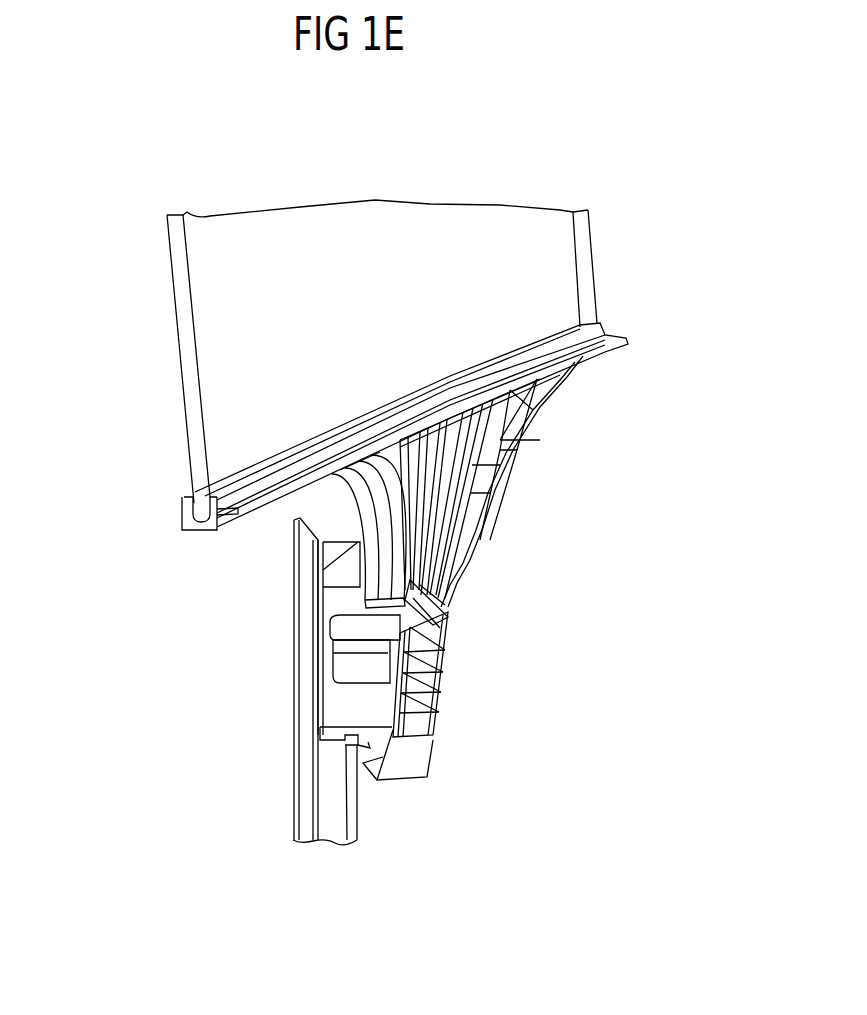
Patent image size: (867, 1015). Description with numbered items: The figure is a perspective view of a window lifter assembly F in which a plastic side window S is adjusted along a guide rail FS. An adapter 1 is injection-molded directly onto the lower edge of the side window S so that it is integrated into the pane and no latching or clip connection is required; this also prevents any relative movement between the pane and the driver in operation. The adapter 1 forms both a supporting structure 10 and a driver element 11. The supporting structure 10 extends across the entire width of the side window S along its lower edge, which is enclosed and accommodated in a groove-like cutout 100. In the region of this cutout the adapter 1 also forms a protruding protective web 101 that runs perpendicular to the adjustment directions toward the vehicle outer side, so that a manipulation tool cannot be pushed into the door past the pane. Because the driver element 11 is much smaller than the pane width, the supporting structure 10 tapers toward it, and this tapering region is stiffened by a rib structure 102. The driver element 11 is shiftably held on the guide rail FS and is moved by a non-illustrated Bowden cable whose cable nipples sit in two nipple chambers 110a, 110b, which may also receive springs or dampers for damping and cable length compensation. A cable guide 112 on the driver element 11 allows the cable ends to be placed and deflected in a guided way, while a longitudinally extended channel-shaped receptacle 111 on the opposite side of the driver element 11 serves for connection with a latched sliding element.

The side window S is at (384, 308).
The window lifter assembly F is at (135, 350).
The supporting structure 10 is at (612, 325).
The groove-like cutout 100 is at (185, 528).
The protective web 101 is at (234, 518).
The adapter 1 is at (515, 493).
The rib structure 102 is at (520, 442).
The nipple chamber 110a is at (432, 617).
The nipple chamber 110b is at (420, 742).
The driver element 11 is at (446, 711).
The cable guide 112 is at (408, 604).
The channel-shaped receptacle 111 is at (360, 737).
The guide rail FS is at (305, 812).